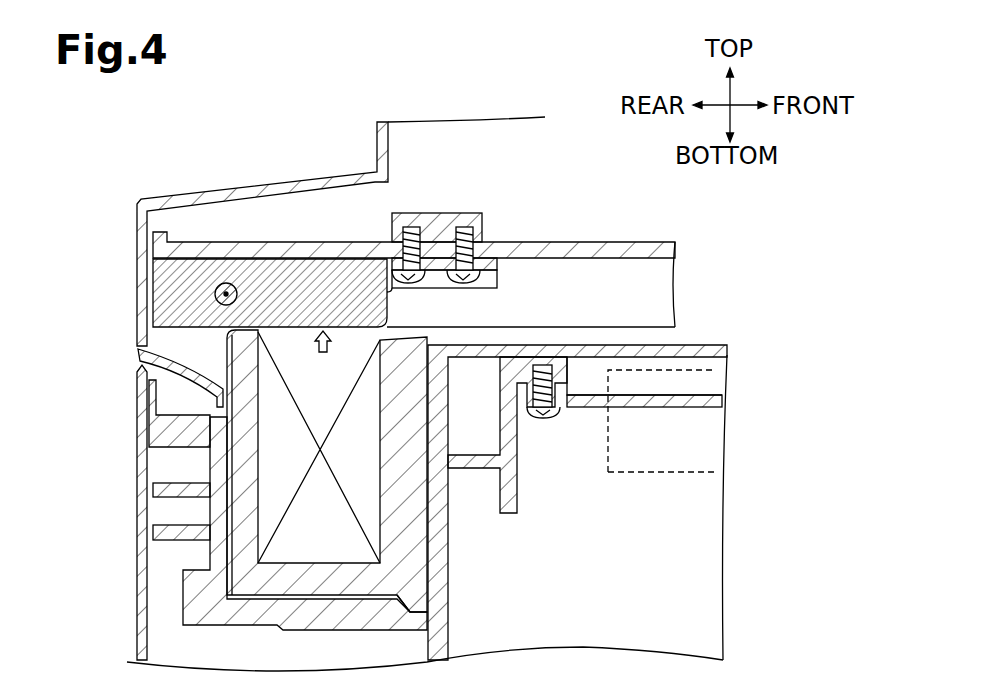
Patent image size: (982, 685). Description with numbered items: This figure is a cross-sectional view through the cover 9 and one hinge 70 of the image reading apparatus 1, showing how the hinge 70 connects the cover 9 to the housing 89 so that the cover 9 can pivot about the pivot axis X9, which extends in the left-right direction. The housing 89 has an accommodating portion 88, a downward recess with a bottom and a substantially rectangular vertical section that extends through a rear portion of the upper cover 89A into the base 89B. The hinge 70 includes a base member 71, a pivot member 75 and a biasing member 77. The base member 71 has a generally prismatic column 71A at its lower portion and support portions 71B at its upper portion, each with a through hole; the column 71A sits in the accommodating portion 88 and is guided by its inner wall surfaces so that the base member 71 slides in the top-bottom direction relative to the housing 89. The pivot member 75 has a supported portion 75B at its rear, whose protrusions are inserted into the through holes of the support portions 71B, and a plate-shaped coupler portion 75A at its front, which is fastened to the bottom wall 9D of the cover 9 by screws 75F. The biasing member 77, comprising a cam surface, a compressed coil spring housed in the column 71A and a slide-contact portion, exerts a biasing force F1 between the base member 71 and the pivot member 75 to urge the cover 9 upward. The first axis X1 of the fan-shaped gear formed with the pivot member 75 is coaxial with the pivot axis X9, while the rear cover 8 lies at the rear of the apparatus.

The image forming apparatus 1 is at (126, 178).
The cover 9 is at (174, 189).
The bottom wall of cover 9D is at (640, 257).
The supported portion 75B is at (163, 288).
The coupler portion 75A is at (497, 264).
The screws 75F is at (466, 283).
The hinge 70 is at (107, 423).
The pivot member 75 is at (170, 341).
The base member 71 is at (217, 463).
The column 71A is at (360, 582).
The support portion 71B is at (208, 349).
The biasing member 77 is at (334, 544).
The biasing force F1 is at (309, 343).
The rear cover 8 is at (128, 598).
The accommodating portion 88 is at (407, 497).
The housing 89 is at (805, 358).
The upper cover 89A is at (723, 352).
The base 89B is at (716, 400).
The pivot axis X9 is at (234, 227).
The first axis X1 is at (223, 283).